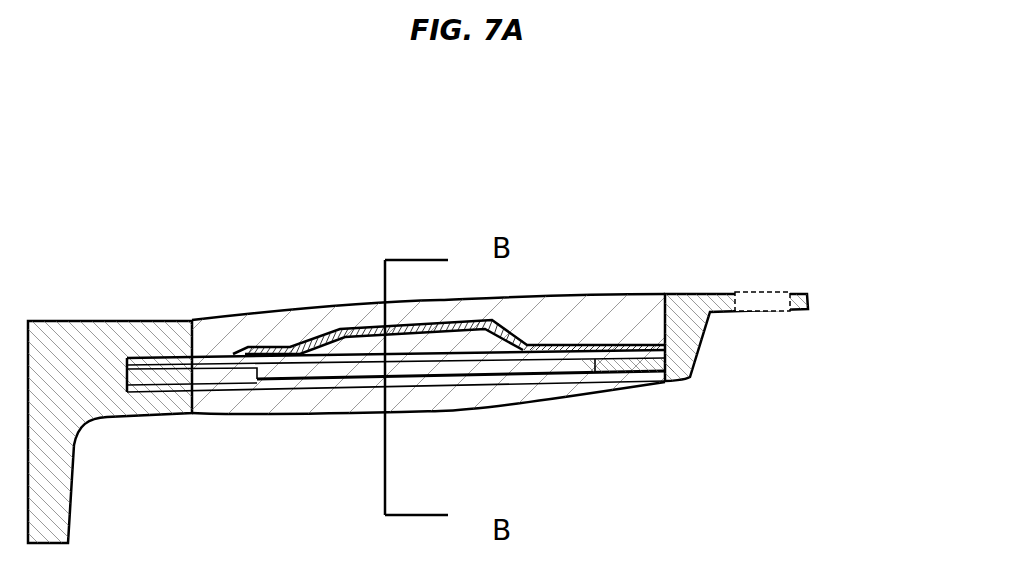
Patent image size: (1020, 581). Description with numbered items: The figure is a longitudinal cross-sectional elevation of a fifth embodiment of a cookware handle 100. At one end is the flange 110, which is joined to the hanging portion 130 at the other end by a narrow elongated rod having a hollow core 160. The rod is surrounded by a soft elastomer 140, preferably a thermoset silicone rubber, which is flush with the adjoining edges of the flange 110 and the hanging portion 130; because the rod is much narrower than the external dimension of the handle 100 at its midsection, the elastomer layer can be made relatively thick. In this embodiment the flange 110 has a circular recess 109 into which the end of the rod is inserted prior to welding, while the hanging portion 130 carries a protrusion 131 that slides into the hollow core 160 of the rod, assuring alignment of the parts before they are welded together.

The handle 100 is at (542, 138).
The circular recess 109 is at (167, 377).
The flange 110 is at (110, 321).
The hanging portion 130 is at (768, 294).
The protrusion 131 is at (615, 363).
The soft elastomer 140 is at (425, 302).
The hollow core 160 is at (532, 336).